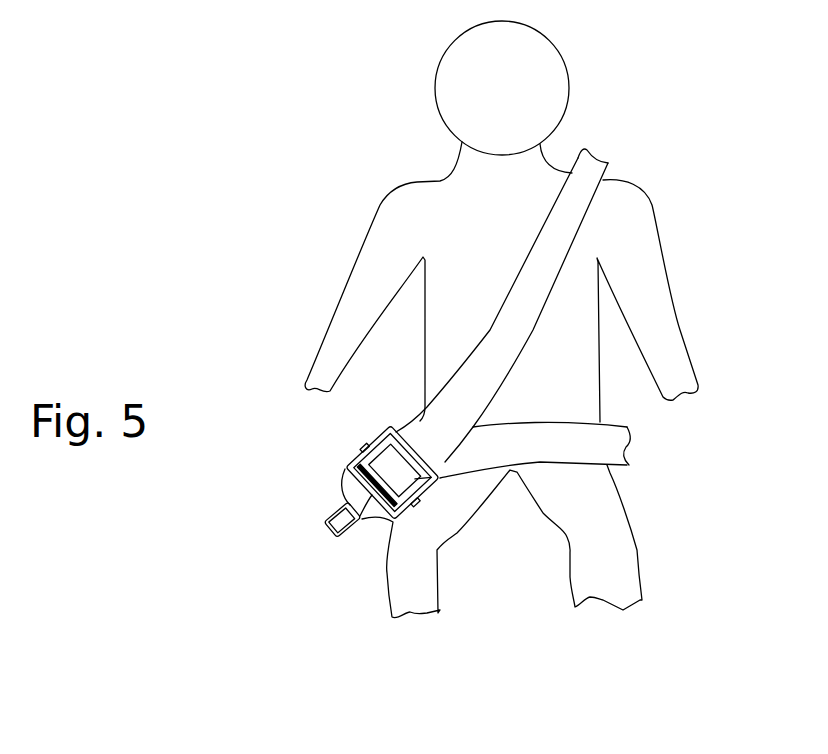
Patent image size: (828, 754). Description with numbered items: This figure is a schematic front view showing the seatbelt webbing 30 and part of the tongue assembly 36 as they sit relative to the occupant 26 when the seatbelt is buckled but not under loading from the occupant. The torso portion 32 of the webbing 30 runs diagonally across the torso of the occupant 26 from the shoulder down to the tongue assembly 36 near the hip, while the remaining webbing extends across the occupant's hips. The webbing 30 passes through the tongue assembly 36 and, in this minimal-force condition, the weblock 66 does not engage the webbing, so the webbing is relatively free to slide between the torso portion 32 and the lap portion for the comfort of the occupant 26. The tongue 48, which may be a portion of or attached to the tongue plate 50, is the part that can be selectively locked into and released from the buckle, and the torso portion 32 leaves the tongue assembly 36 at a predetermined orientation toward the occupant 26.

The occupant 26 is at (553, 40).
The webbing 30 is at (507, 297).
The torso portion 32 is at (590, 207).
The tongue assembly 36 is at (313, 494).
The tongue 48 is at (325, 530).
The tongue plate 50 is at (257, 16).
The weblock 66 is at (316, 440).